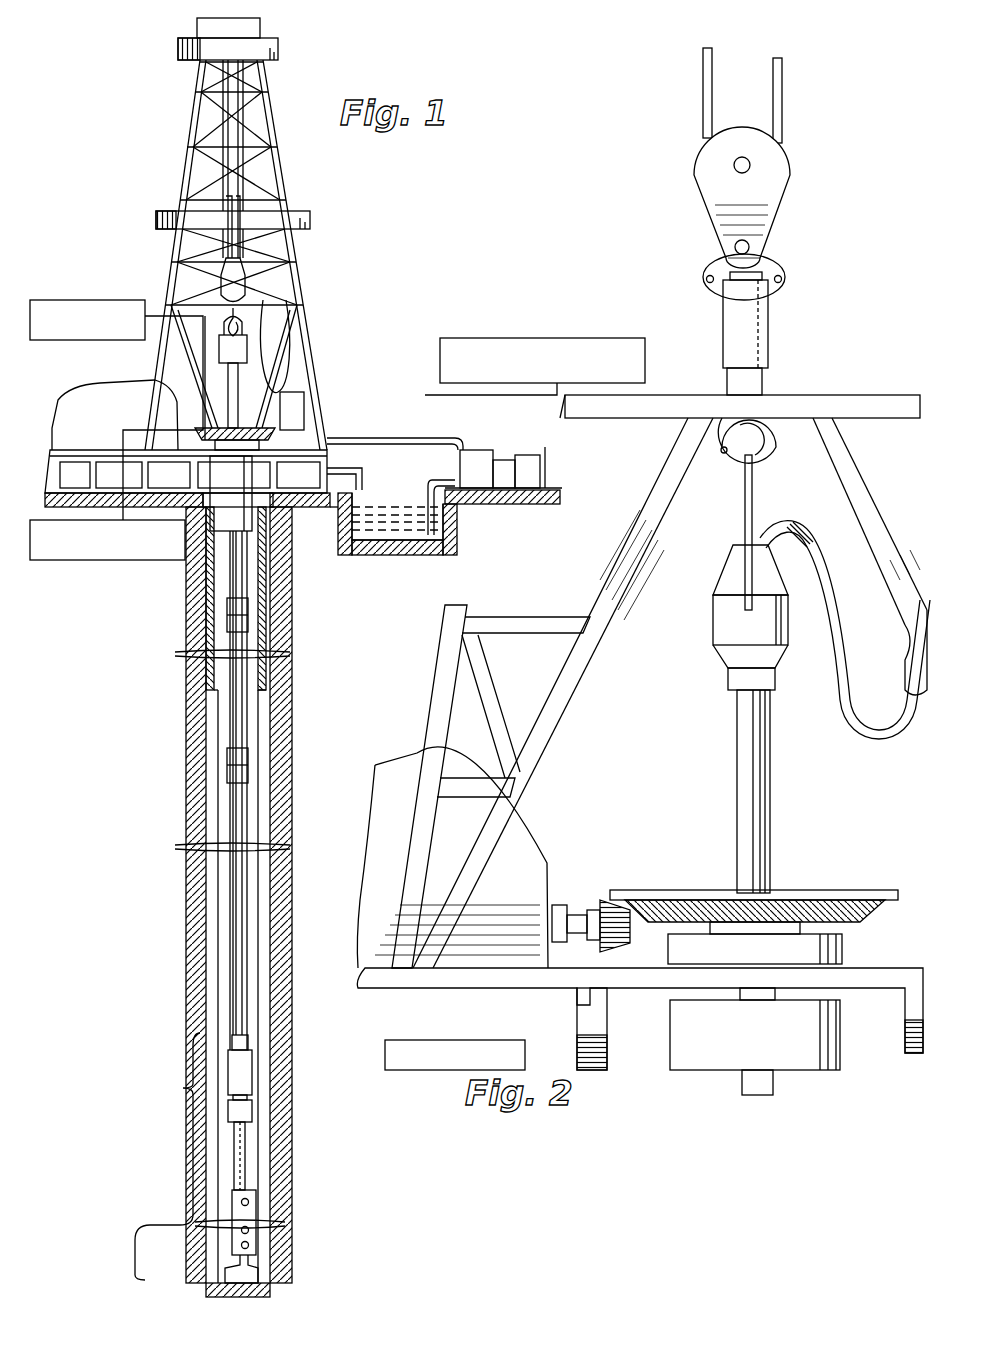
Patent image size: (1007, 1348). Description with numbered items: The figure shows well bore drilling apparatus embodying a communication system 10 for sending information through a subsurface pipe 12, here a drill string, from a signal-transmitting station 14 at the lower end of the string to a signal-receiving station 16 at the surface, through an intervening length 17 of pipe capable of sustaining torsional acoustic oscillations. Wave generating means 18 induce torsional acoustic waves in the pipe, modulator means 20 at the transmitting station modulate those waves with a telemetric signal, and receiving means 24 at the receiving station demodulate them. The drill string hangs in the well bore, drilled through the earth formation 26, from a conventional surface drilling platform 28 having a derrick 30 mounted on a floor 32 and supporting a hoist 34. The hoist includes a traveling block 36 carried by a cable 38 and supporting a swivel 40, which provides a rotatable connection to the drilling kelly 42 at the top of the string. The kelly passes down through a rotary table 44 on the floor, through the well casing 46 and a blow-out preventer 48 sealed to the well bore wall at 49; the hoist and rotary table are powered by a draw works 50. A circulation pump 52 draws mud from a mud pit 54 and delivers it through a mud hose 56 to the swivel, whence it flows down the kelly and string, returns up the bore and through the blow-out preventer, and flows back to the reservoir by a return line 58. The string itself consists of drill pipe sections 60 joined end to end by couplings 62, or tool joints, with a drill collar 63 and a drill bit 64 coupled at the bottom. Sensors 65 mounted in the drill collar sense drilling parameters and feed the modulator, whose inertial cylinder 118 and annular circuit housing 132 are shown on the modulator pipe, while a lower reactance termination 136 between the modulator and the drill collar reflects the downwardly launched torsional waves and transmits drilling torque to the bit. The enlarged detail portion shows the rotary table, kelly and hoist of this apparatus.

In FIG. 1, the communication system 10 is at (178, 795).
In FIG. 1, the subsurface pipe 12 is at (251, 790).
In FIG. 1, the signal-transmitting station 14 is at (220, 1164).
In FIG. 1, the signal-receiving station 16 is at (340, 408).
In FIG. 1, the intervening length of pipe 17 is at (240, 1005).
In FIG. 1, the wave generating means 18 is at (50, 565).
In FIG. 2, the wave generating means 18 is at (725, 892).
In FIG. 1, the modulator means 20 is at (445, 1070).
In FIG. 1, the receiving means 24 is at (222, 400).
In FIG. 1, the earth formation 26 is at (222, 928).
In FIG. 1, the surface drilling platform 28 is at (276, 234).
In FIG. 1, the derrick 30 is at (300, 283).
In FIG. 1, the floor 32 is at (218, 427).
In FIG. 2, the floor 32 is at (410, 992).
In FIG. 1, the hoist 34 is at (210, 170).
In FIG. 2, the hoist 34 is at (700, 100).
In FIG. 1, the traveling block 36 is at (224, 270).
In FIG. 2, the traveling block 36 is at (692, 178).
In FIG. 1, the cable 38 is at (258, 190).
In FIG. 2, the cable 38 is at (703, 62).
In FIG. 2, the swivel 40 is at (712, 625).
In FIG. 1, the drilling kelly 42 is at (240, 420).
In FIG. 2, the drilling kelly 42 is at (772, 790).
In FIG. 2, the rotary table 44 is at (868, 890).
In FIG. 1, the well casing 46 is at (268, 597).
In FIG. 1, the blow-out preventer 48 is at (216, 478).
In FIG. 2, the blow-out preventer 48 is at (680, 1052).
In FIG. 1, the seal to well bore wall 49 is at (205, 565).
In FIG. 1, the draw works 50 is at (122, 390).
In FIG. 2, the draw works 50 is at (550, 822).
In FIG. 1, the drilling fluid circulation pump 52 is at (485, 450).
In FIG. 1, the mud pit 54 is at (393, 545).
In FIG. 2, the mud hose 56 is at (855, 722).
In FIG. 1, the return line 58 is at (362, 463).
In FIG. 1, the drill pipe sections 60 is at (245, 695).
In FIG. 1, the couplings 62 is at (250, 615).
In FIG. 1, the drill collar 63 is at (274, 1227).
In FIG. 1, the drill bit 64 is at (260, 1278).
In FIG. 1, the sensors 65 is at (262, 1200).
In FIG. 1, the inertial cylinder 118 is at (255, 1062).
In FIG. 1, the annular circuit housing 132 is at (256, 1113).
In FIG. 1, the lower reactance termination 136 is at (250, 1140).